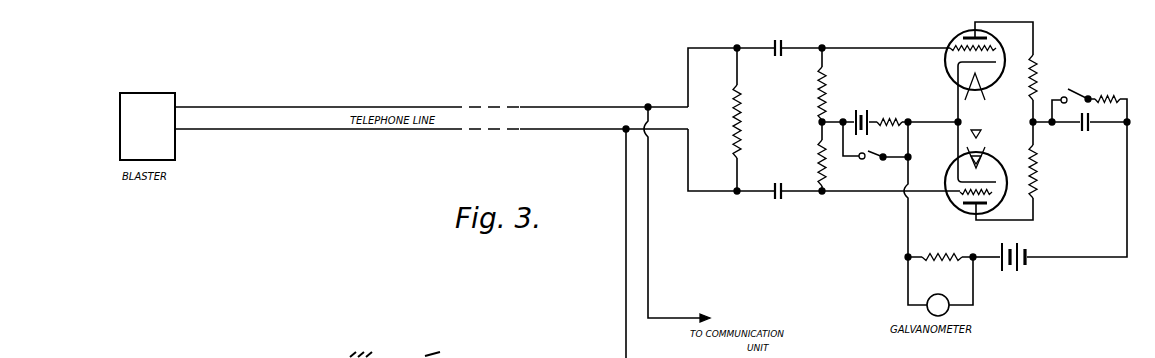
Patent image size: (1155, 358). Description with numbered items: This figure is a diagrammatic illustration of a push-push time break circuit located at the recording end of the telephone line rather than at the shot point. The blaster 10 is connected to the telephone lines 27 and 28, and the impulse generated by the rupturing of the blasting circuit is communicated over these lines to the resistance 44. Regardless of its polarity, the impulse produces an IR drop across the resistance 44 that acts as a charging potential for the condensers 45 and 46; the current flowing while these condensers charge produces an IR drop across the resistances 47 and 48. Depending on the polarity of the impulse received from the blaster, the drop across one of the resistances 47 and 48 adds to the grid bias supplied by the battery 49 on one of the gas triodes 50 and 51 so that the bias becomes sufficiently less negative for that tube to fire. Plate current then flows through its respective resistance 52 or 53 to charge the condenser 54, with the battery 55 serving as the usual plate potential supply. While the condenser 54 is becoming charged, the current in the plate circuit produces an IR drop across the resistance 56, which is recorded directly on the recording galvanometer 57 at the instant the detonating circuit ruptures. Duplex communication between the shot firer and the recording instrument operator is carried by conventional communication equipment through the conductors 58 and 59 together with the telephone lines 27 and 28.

The blaster 10 is at (146, 101).
The telephone line 27 is at (264, 130).
The telephone line 28 is at (262, 107).
The resistance 44 is at (742, 119).
The condenser 45 is at (780, 197).
The condenser 46 is at (781, 43).
The resistance 47 is at (818, 160).
The resistance 48 is at (827, 88).
The battery 49 is at (872, 114).
The gas triode 50 is at (959, 33).
The gas triode 51 is at (998, 164).
The resistance 52 is at (1038, 86).
The resistance 53 is at (1038, 192).
The condenser 54 is at (1089, 132).
The battery 55 is at (1014, 270).
The resistance 56 is at (944, 252).
The recording galvanometer 57 is at (946, 295).
The conductor 58 is at (624, 266).
The conductor 59 is at (650, 278).